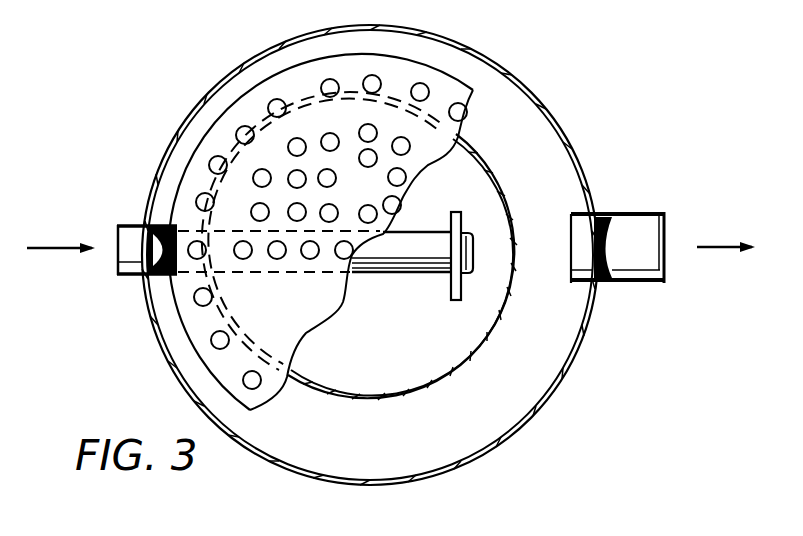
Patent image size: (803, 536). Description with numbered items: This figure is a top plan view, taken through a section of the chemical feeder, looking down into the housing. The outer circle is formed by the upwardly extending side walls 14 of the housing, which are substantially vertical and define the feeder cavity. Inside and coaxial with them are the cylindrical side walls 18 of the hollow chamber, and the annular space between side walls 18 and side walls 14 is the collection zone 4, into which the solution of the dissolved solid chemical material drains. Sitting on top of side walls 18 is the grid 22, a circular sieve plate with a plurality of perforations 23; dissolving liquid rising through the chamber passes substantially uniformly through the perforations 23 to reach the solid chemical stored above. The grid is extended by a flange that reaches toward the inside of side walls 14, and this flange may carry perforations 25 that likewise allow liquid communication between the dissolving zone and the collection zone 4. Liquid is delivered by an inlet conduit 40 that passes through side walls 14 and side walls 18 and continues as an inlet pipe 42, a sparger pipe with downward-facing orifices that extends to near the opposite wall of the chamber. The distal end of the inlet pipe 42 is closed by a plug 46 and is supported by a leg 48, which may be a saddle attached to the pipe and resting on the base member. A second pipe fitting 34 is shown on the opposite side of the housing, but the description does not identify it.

The side walls 14 is at (563, 133).
The side walls of chamber 18 is at (490, 162).
The grid 22 is at (442, 158).
The perforations 23 is at (327, 135).
The perforations 25 is at (424, 84).
The outlet pipe 34 is at (635, 212).
The inlet conduit 40 is at (135, 225).
The inlet pipe 42 is at (400, 250).
The plug 46 is at (470, 258).
The leg 48 is at (456, 212).
The collection zone 4 is at (540, 265).